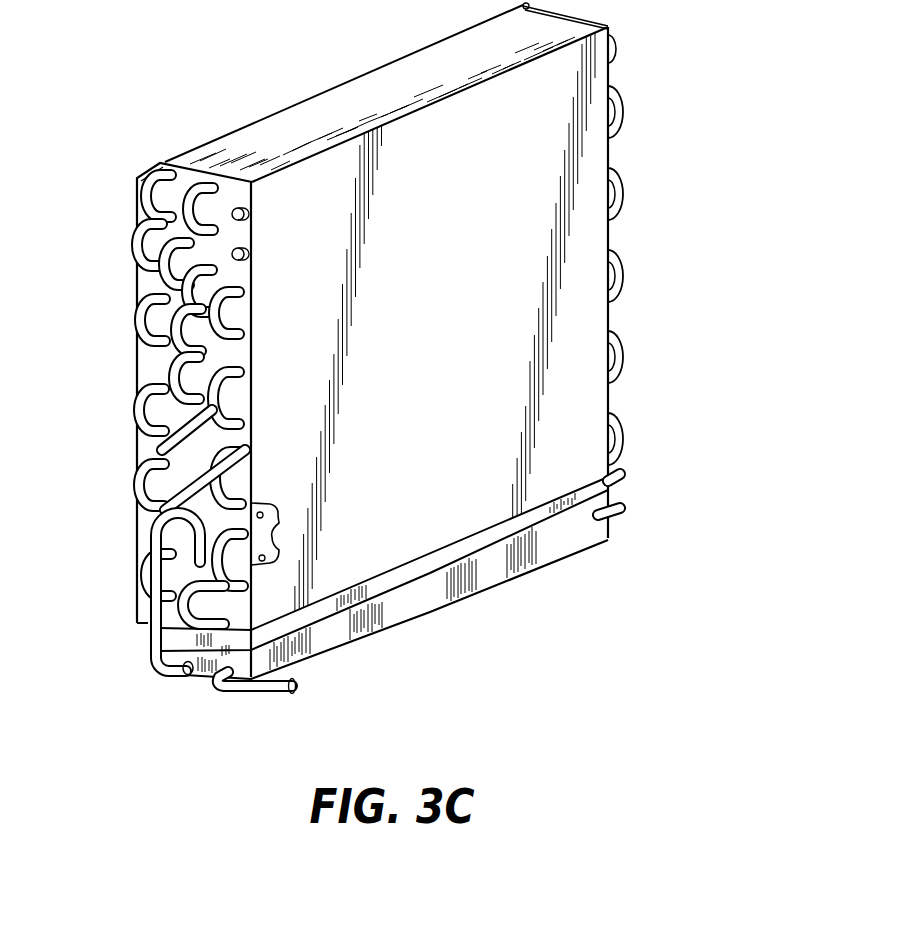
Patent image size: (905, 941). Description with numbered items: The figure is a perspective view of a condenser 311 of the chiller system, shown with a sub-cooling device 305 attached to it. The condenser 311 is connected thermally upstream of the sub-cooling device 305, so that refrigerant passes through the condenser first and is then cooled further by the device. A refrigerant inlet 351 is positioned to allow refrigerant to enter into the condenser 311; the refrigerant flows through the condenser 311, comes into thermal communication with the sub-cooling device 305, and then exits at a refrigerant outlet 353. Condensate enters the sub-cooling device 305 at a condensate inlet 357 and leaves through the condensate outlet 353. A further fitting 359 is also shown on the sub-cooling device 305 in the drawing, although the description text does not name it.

The sub-cooling device 305 is at (495, 533).
The condenser 311 is at (358, 112).
The refrigerant inlet 351 is at (143, 218).
The refrigerant outlet 353 is at (293, 688).
The condensate inlet 357 is at (620, 475).
The fitting 359 is at (620, 512).